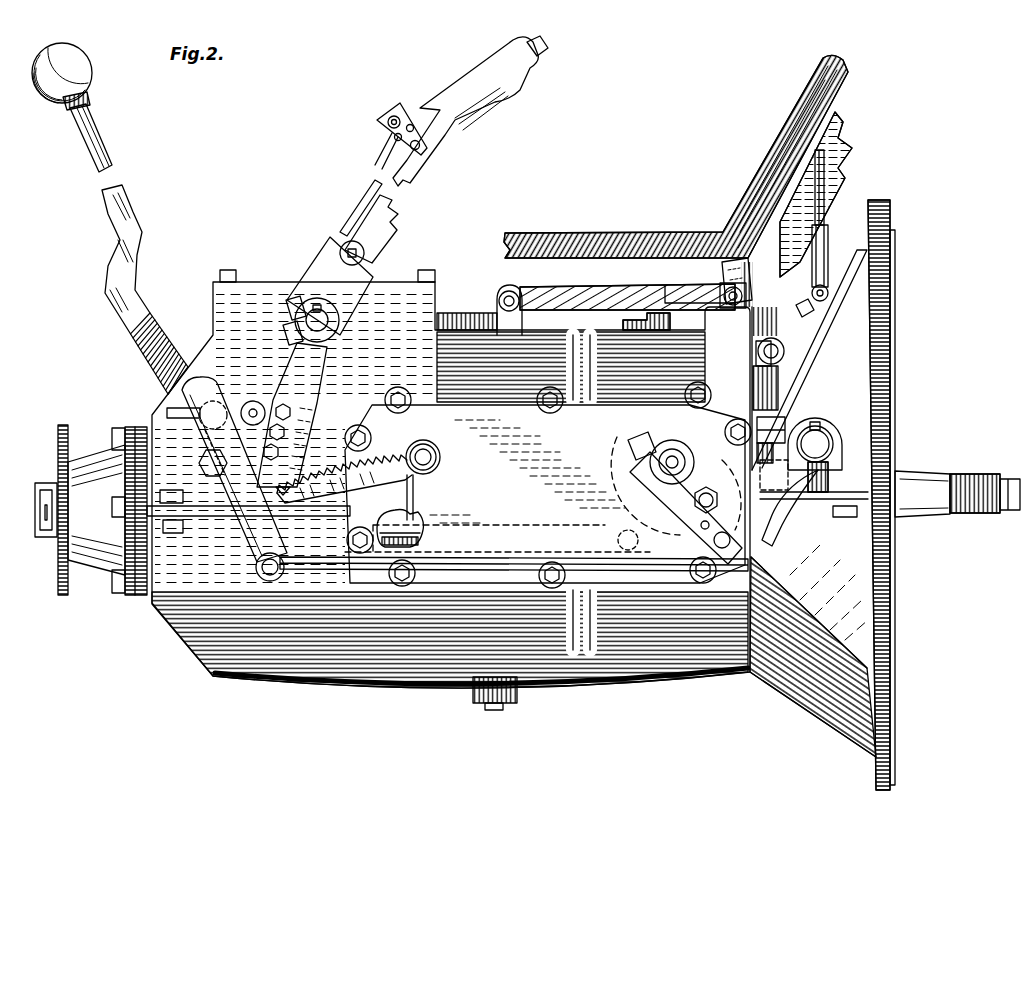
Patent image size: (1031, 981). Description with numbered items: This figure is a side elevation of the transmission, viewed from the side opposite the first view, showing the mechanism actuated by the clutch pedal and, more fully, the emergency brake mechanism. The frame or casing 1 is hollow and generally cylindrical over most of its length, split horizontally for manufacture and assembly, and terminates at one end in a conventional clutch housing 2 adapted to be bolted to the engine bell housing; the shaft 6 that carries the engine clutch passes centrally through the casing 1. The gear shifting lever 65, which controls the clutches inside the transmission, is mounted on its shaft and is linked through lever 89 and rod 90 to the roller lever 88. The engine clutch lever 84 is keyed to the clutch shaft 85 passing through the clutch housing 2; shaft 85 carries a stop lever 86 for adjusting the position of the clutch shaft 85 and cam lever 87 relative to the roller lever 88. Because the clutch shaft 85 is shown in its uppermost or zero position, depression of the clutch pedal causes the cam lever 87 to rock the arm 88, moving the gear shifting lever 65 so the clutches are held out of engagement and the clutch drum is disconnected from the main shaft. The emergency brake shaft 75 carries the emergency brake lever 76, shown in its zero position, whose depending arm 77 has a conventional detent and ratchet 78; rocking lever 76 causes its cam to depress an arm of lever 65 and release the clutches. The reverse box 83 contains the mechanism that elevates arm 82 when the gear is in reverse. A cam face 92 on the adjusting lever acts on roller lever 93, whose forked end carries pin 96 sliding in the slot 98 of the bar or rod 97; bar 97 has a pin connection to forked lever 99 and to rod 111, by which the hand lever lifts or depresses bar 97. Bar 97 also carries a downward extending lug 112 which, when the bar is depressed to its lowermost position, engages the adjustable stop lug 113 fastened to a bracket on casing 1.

The frame or casing 1 is at (672, 690).
The clutch housing 2 is at (822, 495).
The shaft 6 is at (903, 471).
The gear shifting lever 65 is at (115, 312).
The emergency brake shaft 75 is at (300, 314).
The emergency brake lever 76 is at (380, 218).
The depending arm 77 is at (293, 382).
The detent and ratchet 78 is at (410, 462).
The arm 82 is at (428, 446).
The reverse box 83 is at (548, 485).
The engine clutch lever 84 is at (848, 152).
The clutch shaft 85 is at (824, 443).
The stop lever 86 is at (777, 428).
The cam lever 87 is at (798, 477).
The roller lever 88 is at (700, 562).
The lever 89 is at (250, 532).
The rod 90 is at (505, 560).
The cam face 92 is at (776, 380).
The roller lever 93 is at (762, 341).
The pin 96 is at (727, 290).
The bar or rod 97 is at (528, 292).
The slot 98 is at (750, 264).
The forked lever 99 is at (496, 306).
The rod 111 is at (828, 196).
The downward extending lug 112 is at (647, 302).
The stop lug 113 is at (640, 318).